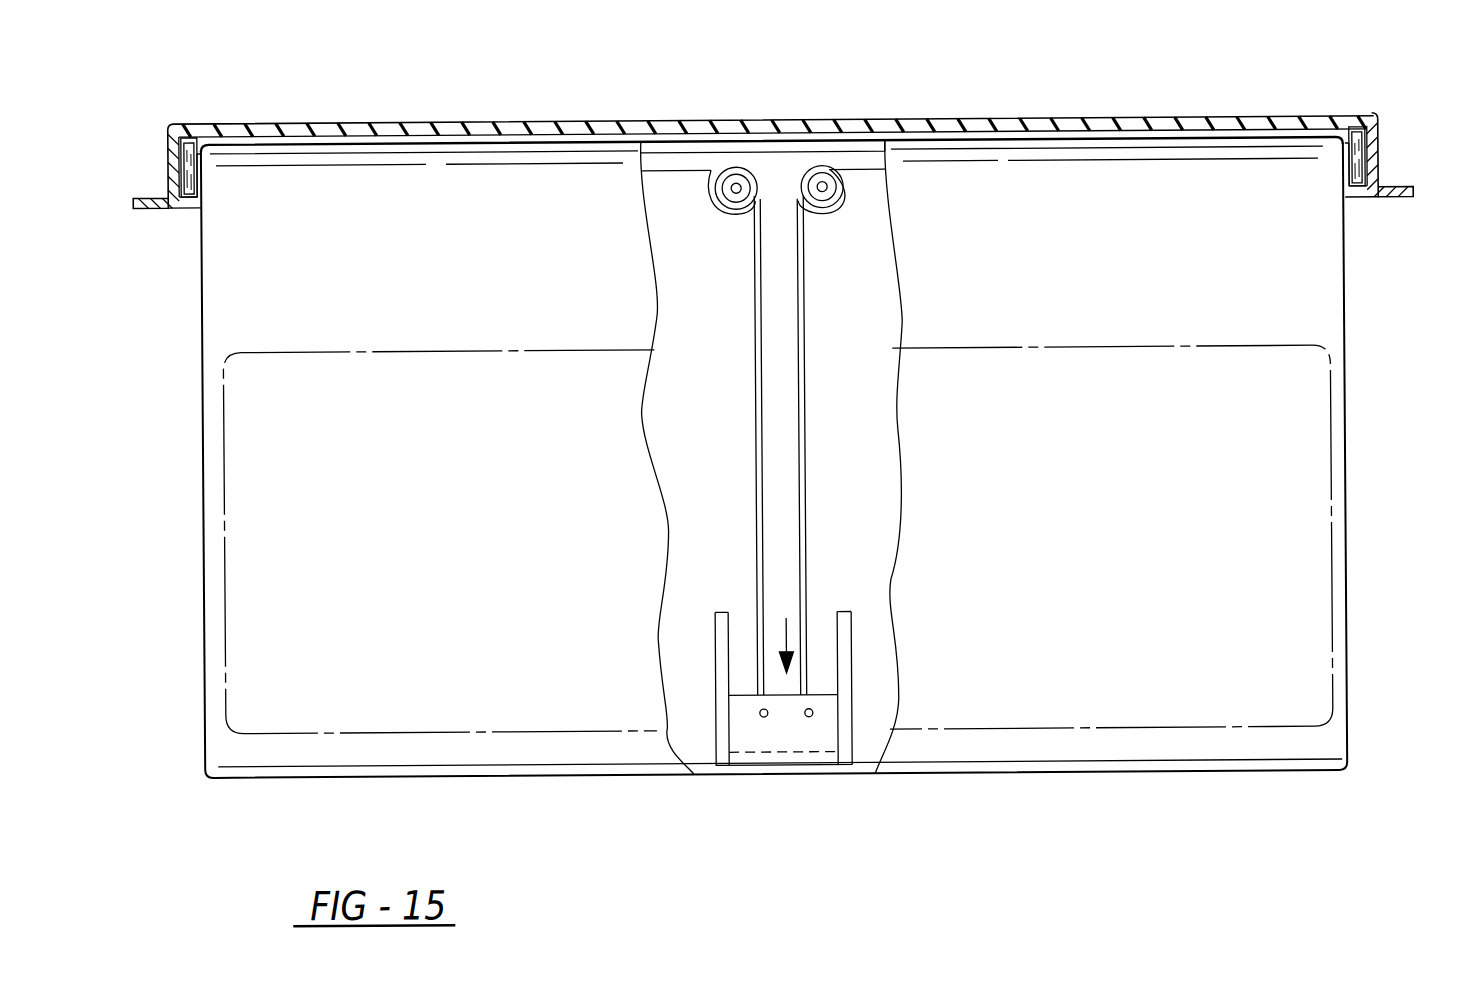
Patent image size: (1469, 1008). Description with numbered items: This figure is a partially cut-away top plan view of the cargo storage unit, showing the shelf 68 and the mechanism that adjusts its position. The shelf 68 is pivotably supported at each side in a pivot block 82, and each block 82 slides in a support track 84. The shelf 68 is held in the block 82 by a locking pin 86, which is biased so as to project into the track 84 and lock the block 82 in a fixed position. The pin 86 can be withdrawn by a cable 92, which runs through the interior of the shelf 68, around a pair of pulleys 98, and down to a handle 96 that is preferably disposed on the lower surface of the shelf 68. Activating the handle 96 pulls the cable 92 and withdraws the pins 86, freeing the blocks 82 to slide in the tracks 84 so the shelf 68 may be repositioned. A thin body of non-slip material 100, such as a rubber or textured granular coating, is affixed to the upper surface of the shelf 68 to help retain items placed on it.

The shelf 68 is at (223, 296).
The pivot block 82 is at (196, 146).
The support track 84 is at (176, 166).
The locking pin 86 is at (202, 157).
The cable 92 is at (762, 232).
The handle 96 is at (763, 740).
The pulley 98 is at (731, 170).
The non-slip material 100 is at (322, 675).